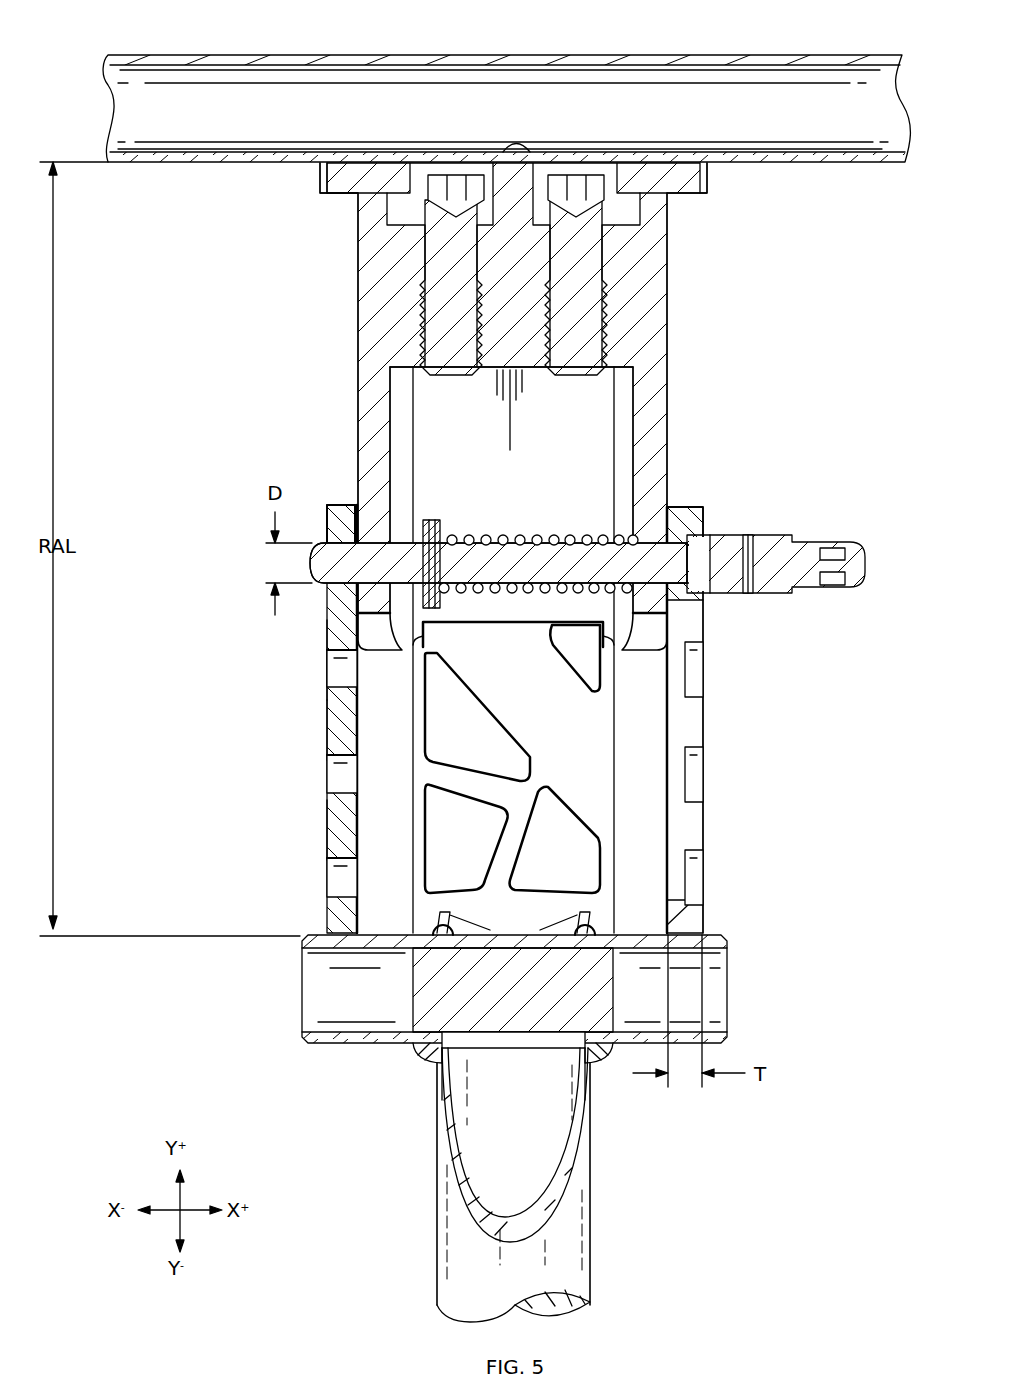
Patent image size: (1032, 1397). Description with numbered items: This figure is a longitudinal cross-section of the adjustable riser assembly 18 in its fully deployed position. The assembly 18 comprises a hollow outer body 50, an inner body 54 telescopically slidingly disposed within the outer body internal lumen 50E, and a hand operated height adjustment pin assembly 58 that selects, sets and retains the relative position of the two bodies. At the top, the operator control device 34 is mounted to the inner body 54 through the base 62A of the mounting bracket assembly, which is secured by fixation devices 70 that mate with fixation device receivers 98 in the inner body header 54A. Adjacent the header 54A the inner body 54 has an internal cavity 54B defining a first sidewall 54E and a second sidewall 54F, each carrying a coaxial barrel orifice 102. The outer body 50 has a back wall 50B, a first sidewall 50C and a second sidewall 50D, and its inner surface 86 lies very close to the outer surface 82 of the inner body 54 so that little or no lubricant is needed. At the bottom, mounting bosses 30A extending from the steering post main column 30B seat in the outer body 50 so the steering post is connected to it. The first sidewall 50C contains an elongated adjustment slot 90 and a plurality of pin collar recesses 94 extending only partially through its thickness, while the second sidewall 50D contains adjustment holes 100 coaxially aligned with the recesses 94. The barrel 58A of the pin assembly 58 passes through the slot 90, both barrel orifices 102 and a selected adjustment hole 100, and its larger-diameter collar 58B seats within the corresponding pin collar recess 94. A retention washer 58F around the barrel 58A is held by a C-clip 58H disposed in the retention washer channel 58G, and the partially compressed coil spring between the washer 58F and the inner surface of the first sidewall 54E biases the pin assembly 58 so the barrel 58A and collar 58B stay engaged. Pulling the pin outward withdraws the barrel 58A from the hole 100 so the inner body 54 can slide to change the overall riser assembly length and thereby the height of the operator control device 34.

The adjustable riser assembly 18 is at (845, 328).
The operator control device 34 is at (304, 55).
The mounting bosses 30A is at (728, 1005).
The steering post main column 30B is at (436, 1188).
The outer body 50 is at (323, 666).
The back wall 50B is at (370, 722).
The first sidewall 50C is at (702, 735).
The second sidewall 50D is at (330, 798).
The internal lumen 50E is at (643, 813).
The inner body 54 is at (665, 330).
The header 54A is at (360, 266).
The internal cavity 54B is at (604, 400).
The first sidewall 54E is at (660, 448).
The second sidewall 54F is at (362, 380).
The height adjustment pin assembly 58 is at (776, 517).
The barrel 58A is at (478, 552).
The collar 58B is at (705, 532).
The retention washer 58F is at (440, 522).
The retention washer channel 58G is at (490, 596).
The C-clip 58H is at (440, 540).
The base 62A is at (709, 178).
The fixation devices 70 is at (418, 207).
The outer surface 82 is at (668, 388).
The inner surface 86 is at (370, 827).
The adjustment slot 90 is at (677, 708).
The pin collar recesses 94 is at (699, 660).
The fixation device receiver 98 is at (593, 258).
The adjustment holes 100 is at (335, 562).
The barrel orifice 102 is at (338, 540).